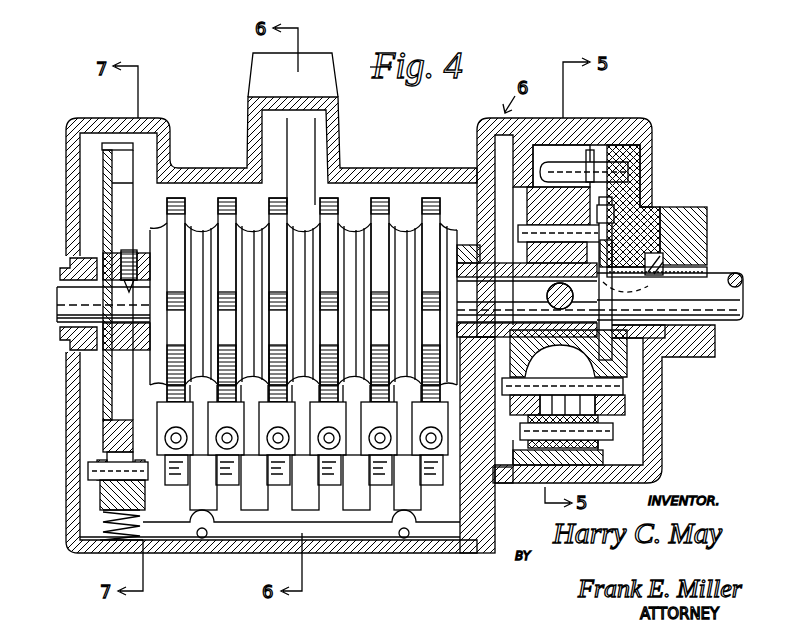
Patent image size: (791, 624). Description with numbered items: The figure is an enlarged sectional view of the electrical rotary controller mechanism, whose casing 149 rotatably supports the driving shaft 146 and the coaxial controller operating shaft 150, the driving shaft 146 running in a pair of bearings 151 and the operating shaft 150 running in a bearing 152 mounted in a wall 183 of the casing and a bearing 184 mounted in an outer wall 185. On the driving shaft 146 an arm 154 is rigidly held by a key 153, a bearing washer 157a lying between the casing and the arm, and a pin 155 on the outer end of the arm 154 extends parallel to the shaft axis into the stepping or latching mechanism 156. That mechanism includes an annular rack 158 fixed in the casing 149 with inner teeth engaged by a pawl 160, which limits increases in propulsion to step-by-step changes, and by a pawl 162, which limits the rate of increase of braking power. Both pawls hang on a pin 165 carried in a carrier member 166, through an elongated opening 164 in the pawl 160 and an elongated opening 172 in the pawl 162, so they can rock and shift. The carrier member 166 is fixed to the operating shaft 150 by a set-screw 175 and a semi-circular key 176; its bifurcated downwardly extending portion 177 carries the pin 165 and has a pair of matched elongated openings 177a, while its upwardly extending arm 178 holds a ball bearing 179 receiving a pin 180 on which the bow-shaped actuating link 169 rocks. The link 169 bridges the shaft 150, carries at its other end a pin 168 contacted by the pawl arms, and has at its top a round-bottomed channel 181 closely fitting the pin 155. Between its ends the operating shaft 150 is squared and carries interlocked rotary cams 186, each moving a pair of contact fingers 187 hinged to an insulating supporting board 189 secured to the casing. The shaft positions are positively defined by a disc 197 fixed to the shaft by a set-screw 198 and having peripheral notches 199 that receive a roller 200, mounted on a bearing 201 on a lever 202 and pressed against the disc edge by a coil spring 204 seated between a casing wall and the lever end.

The driving shaft 146 is at (737, 273).
The casing 149 is at (632, 118).
The controller operating shaft 150 is at (500, 262).
The bearings 151 is at (705, 345).
The bearing 152 is at (483, 330).
The key 153 is at (700, 222).
The arm 154 is at (645, 195).
The pin 155 is at (610, 170).
The stepping or latching mechanism 156 is at (700, 340).
The bearing washer 157a is at (660, 265).
The annular portion or rack 158 is at (573, 125).
The pawl 160 is at (560, 455).
The pawl 162 is at (582, 457).
The opening 164 is at (575, 460).
The pin 165 is at (605, 427).
The carrier member 166 is at (631, 353).
The pin 168 is at (618, 388).
The actuating element or link 169 is at (545, 172).
The opening 172 is at (620, 463).
The set-screw 175 is at (555, 294).
The semi-circular key 176 is at (615, 285).
The downwardly extending portion 177 is at (612, 412).
The elongated openings 177a is at (597, 335).
The upwardly extending arm 178 is at (625, 225).
The ball bearing 179 is at (605, 242).
The pin 180 is at (528, 233).
The round-bottomed channel 181 is at (590, 158).
The wall 183 is at (483, 403).
The bearing 184 is at (72, 268).
The outer wall 185 is at (72, 212).
The rotary cams 186 is at (378, 198).
The contact fingers 187 is at (230, 452).
The supporting board 189 is at (332, 482).
The disc 197 is at (115, 445).
The set-screw 198 is at (128, 262).
The notches 199 is at (108, 470).
The roller 200 is at (105, 508).
The bearing 201 is at (100, 490).
The lever 202 is at (110, 512).
The spring 204 is at (120, 533).